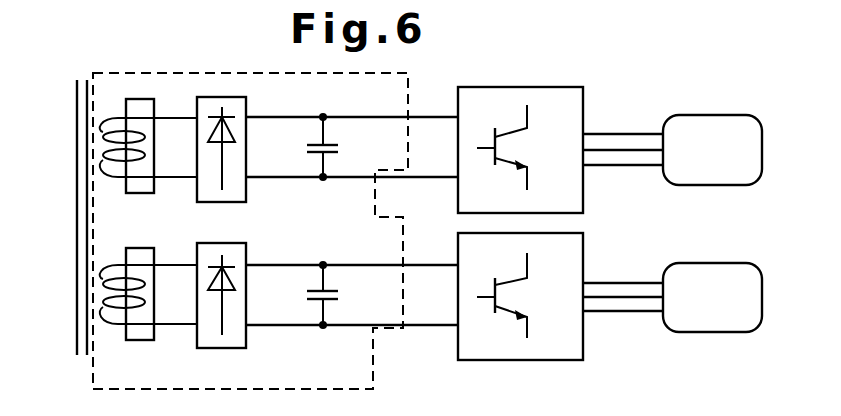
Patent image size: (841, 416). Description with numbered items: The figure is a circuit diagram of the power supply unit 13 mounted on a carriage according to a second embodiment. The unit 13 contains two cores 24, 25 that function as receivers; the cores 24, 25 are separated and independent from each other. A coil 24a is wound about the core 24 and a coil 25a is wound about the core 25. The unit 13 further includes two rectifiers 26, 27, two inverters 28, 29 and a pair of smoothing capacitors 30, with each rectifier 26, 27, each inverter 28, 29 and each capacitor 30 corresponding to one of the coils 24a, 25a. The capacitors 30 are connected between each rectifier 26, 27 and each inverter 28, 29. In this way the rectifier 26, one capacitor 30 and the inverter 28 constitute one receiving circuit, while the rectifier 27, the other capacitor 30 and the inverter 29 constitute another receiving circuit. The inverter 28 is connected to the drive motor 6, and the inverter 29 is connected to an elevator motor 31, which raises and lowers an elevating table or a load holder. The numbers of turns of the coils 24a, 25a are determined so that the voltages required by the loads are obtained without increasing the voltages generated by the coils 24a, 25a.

The drive motor 6 is at (727, 117).
The power supply unit 13 is at (107, 70).
The core 24 is at (153, 165).
The coil 24a is at (107, 176).
The core 25 is at (150, 315).
The coil 25a is at (107, 325).
The rectifier 26 is at (240, 160).
The rectifier 27 is at (240, 313).
The inverter 28 is at (457, 192).
The inverter 29 is at (457, 342).
The smoothing capacitor 30 is at (333, 138).
The elevator motor 31 is at (727, 266).